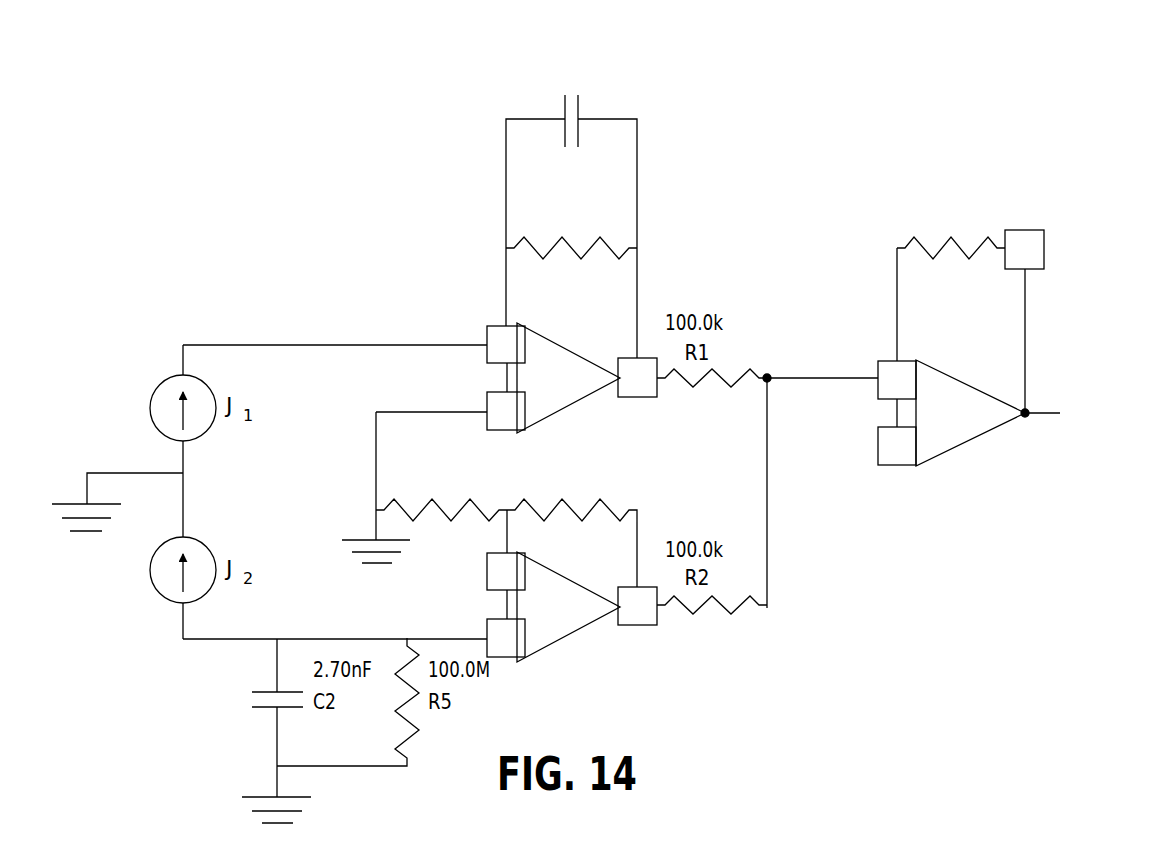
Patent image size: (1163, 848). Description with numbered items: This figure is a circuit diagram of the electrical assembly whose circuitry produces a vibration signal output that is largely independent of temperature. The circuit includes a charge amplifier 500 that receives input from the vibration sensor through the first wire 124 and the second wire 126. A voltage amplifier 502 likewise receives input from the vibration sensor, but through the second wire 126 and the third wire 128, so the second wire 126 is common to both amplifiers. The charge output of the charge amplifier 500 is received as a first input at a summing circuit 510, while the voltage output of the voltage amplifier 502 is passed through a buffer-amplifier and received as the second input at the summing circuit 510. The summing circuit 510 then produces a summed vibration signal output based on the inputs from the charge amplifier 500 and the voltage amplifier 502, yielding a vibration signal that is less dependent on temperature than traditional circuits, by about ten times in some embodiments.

The first wire 124 is at (240, 338).
The second wire 126 is at (147, 468).
The third wire 128 is at (286, 632).
The charge amplifier 500 is at (473, 308).
The voltage amplifier 502 is at (563, 652).
The summing circuit 510 is at (843, 235).